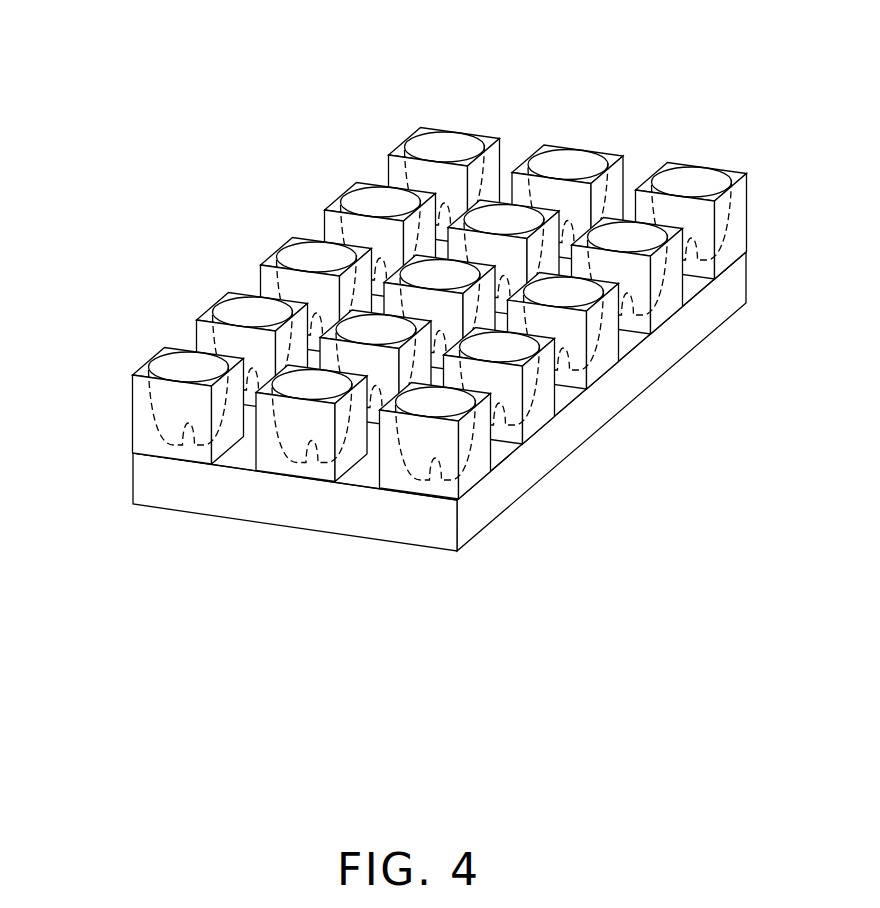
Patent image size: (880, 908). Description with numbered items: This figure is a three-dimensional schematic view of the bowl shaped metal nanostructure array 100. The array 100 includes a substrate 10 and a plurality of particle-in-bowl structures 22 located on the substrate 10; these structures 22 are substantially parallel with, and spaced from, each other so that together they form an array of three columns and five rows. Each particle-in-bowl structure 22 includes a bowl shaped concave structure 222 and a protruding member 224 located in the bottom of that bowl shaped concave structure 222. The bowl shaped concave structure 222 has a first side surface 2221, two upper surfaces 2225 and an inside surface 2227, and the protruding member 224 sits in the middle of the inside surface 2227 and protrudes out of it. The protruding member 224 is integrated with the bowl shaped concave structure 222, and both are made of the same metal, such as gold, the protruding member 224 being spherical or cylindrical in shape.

The bowl shaped metal nanostructure array 100 is at (390, 290).
The substrate 10 is at (439, 390).
The particle-in-bowl structure 22 is at (390, 353).
The bowl shaped concave structure 222 is at (513, 474).
The first side surface 2221 is at (328, 507).
The upper surfaces 2225 is at (163, 350).
The inside surface 2227 is at (138, 381).
The protruding member 224 is at (448, 477).